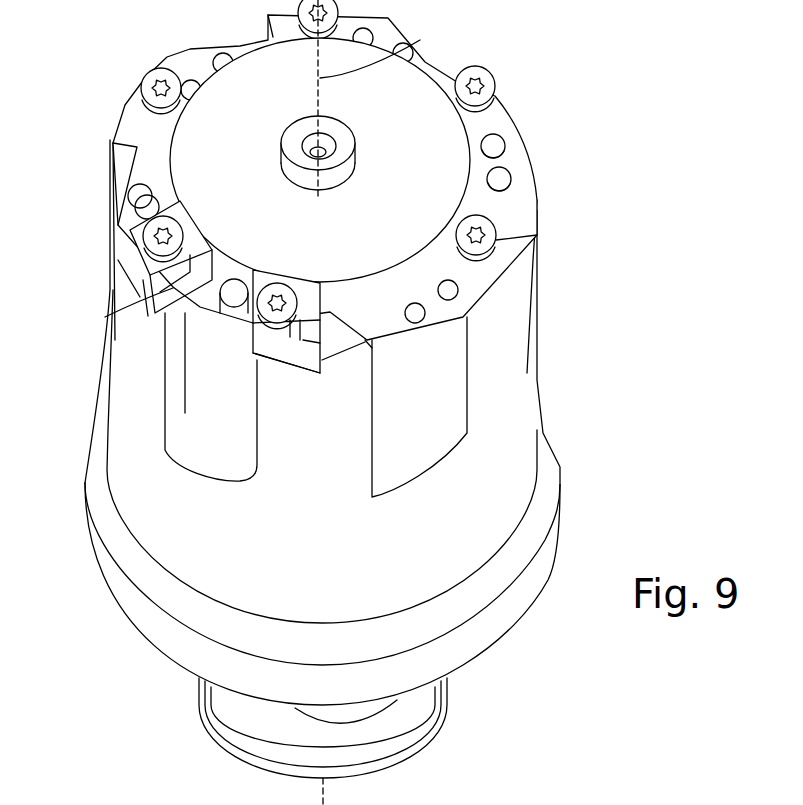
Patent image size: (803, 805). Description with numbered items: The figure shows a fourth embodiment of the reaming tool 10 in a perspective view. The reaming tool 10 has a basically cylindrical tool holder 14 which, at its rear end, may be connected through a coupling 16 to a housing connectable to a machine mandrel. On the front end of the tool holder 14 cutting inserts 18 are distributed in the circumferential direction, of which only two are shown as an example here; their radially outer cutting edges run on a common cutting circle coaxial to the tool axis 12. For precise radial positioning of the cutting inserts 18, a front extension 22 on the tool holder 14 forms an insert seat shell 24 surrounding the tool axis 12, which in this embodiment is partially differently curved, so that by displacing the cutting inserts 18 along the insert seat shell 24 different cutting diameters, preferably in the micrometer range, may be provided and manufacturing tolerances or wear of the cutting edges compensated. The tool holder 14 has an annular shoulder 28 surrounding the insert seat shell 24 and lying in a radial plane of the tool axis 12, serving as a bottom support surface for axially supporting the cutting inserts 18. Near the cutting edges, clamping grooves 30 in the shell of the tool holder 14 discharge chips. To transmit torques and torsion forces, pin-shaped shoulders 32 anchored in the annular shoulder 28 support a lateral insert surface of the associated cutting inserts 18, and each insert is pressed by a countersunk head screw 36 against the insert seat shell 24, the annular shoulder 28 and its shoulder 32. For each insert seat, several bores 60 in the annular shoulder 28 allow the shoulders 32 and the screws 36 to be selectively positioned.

The reaming tool 10 is at (117, 109).
The tool axis 12 is at (375, 66).
The tool holder 14 is at (517, 383).
The coupling 16 is at (440, 717).
The cutting inserts 18 is at (253, 332).
The front extension 22 is at (423, 78).
The insert seat shell 24 is at (417, 260).
The annular shoulder 28 is at (498, 110).
The clamping grooves 30 is at (197, 377).
The pin-shaped shoulders 32 is at (140, 208).
The countersunk head screw 36 is at (493, 233).
The bores 60 is at (502, 177).